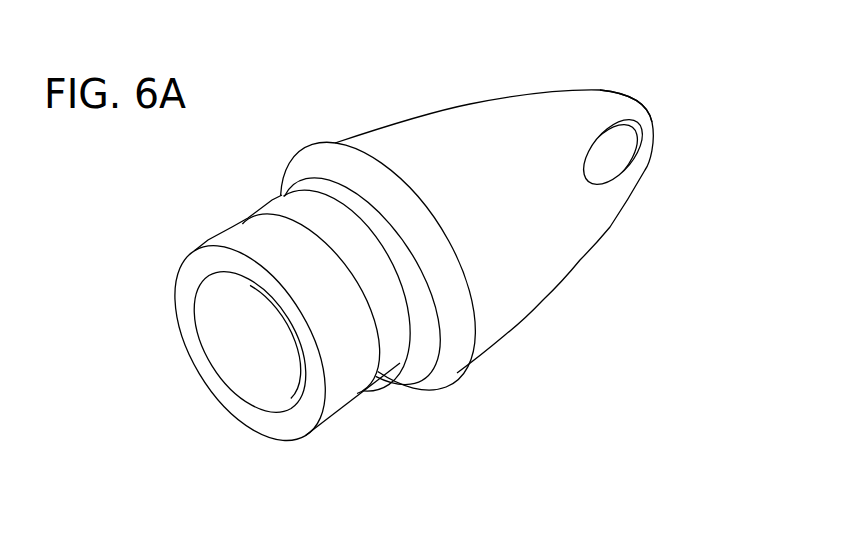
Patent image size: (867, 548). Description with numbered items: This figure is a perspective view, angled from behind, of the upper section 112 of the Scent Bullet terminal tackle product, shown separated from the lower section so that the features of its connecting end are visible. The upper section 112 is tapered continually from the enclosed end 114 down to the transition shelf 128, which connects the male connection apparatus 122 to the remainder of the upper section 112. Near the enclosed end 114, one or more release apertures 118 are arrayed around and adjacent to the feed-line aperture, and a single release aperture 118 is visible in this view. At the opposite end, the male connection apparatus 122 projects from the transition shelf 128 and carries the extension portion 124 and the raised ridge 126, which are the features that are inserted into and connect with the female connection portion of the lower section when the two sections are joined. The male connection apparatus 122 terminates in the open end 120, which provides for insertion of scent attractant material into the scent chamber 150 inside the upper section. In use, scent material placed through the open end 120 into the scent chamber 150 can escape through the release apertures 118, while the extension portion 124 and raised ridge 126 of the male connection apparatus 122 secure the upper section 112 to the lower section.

The upper section 112 is at (440, 130).
The enclosed end 114 is at (658, 98).
The release apertures 118 is at (616, 152).
The open end 120 is at (199, 392).
The male connection apparatus 122 is at (233, 212).
The extension portion 124 is at (342, 397).
The raised ridge 126 is at (384, 380).
The transition shelf 128 is at (450, 370).
The scent chamber 150 is at (240, 327).